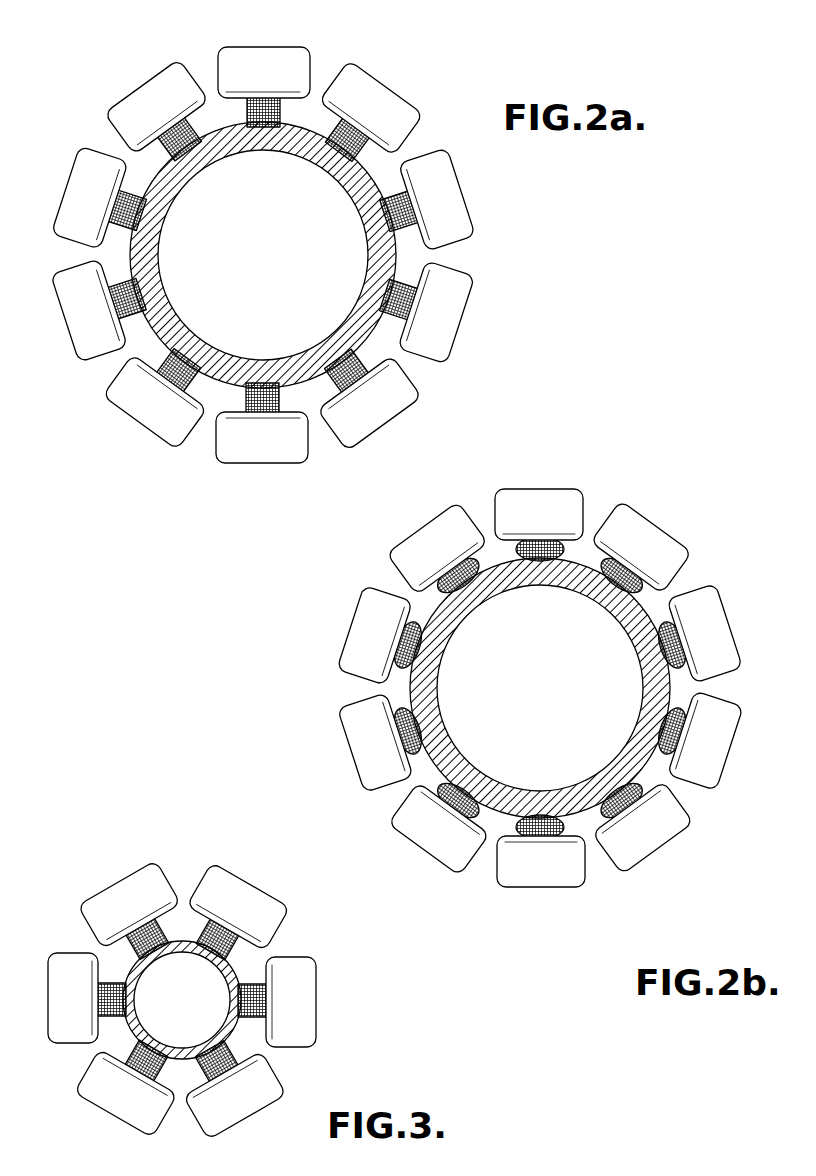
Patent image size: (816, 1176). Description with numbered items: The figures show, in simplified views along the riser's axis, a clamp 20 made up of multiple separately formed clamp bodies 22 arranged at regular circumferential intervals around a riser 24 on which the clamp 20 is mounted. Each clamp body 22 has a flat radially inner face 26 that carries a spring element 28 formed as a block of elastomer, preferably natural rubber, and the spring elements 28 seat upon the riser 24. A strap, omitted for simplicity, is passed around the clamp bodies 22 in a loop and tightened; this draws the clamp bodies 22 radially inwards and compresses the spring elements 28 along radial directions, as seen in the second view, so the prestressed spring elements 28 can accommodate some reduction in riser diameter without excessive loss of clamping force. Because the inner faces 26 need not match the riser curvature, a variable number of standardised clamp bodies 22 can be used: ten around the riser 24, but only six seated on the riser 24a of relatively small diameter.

In FIG. 2a, the clamp 20 is at (425, 66).
In FIG. 2b, the clamp 20 is at (628, 496).
In FIG. 2a, the clamp body 22 is at (387, 420).
In FIG. 2b, the clamp body 22 is at (672, 842).
In FIG. 3, the clamp body 22 is at (113, 885).
In FIG. 2a, the riser 24 is at (225, 383).
In FIG. 2b, the riser 24 is at (503, 817).
In FIG. 3, the riser of relatively small diameter 24a is at (237, 1027).
In FIG. 2a, the radially inner face 26 is at (137, 345).
In FIG. 2b, the radially inner face 26 is at (413, 788).
In FIG. 2a, the spring element 28 is at (375, 352).
In FIG. 2b, the spring element 28 is at (654, 788).
In FIG. 3, the spring element 28 is at (250, 983).